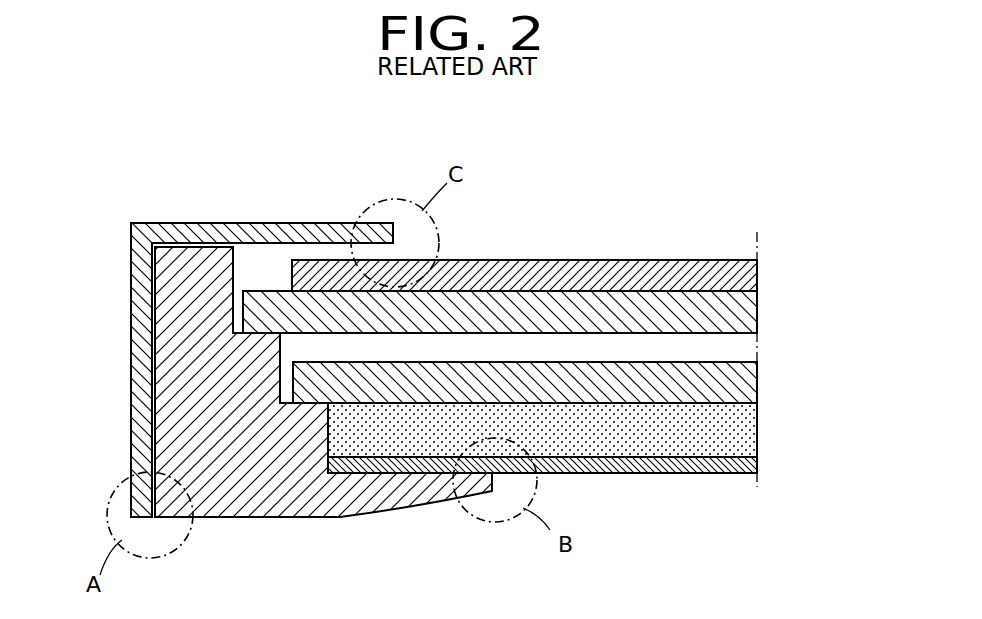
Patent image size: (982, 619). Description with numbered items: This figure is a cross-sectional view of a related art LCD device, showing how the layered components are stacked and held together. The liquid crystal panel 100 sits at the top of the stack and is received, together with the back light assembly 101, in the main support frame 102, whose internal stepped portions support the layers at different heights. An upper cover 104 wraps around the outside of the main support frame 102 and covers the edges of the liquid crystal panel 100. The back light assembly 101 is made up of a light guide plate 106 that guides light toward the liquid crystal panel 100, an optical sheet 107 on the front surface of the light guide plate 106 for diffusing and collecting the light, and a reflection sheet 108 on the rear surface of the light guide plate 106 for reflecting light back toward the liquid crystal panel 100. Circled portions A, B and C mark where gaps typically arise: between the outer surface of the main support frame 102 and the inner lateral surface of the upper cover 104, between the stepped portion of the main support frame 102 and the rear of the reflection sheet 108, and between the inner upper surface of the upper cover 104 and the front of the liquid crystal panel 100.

The liquid crystal panel 100 is at (766, 261).
The back light assembly 101 is at (599, 420).
The main support frame 102 is at (165, 402).
The upper cover 104 is at (140, 334).
The light guide plate 106 is at (748, 430).
The optical sheet 107 is at (748, 381).
The reflection sheet 108 is at (589, 465).